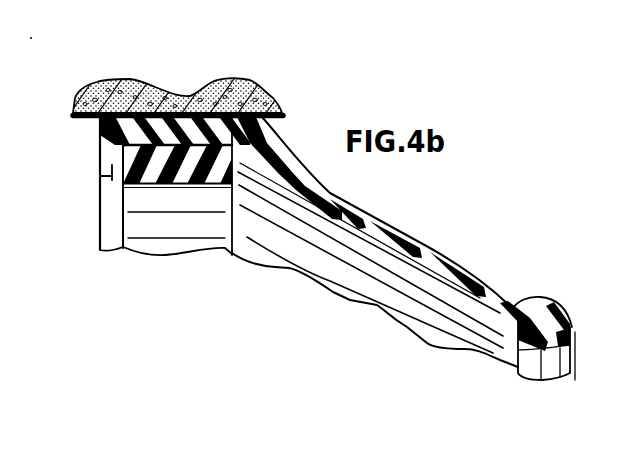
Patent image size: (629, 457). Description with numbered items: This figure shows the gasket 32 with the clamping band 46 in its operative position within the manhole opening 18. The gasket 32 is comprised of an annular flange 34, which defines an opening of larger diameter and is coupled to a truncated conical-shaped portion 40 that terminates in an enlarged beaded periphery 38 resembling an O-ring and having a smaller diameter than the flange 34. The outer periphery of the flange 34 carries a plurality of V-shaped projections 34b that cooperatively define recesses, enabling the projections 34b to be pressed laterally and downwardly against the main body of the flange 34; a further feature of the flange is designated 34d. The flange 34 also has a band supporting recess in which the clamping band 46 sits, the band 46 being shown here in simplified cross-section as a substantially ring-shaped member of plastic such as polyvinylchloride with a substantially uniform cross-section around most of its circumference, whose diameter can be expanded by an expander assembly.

The manhole opening 18 is at (271, 125).
The gasket 32 is at (481, 247).
The annular flange 34 is at (100, 119).
The V-shaped projections 34b is at (190, 113).
The notch 34d is at (100, 176).
The enlarged beaded periphery 38 is at (553, 300).
The truncated conical-shaped portion 40 is at (429, 252).
The clamping band 46 is at (167, 184).